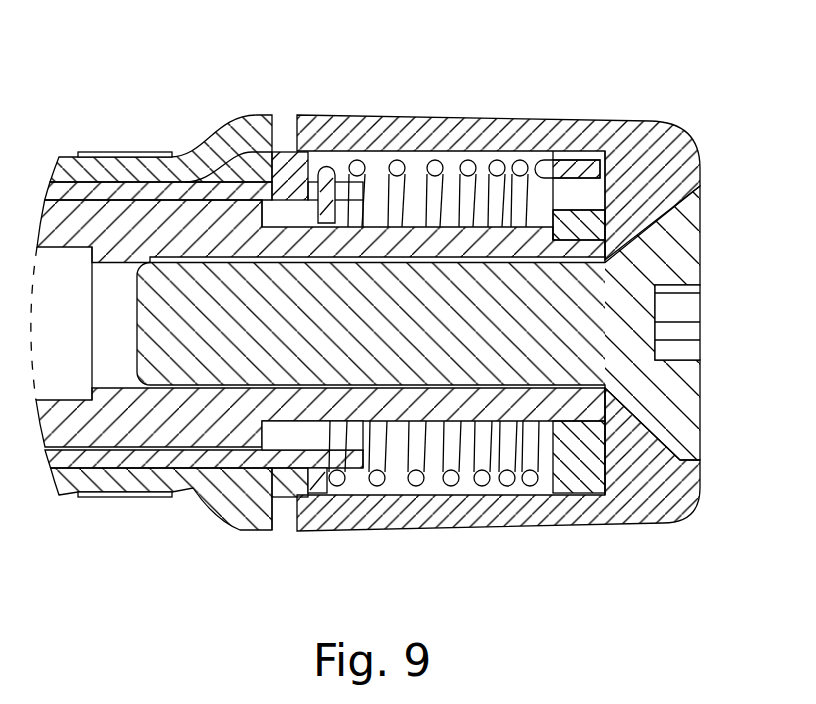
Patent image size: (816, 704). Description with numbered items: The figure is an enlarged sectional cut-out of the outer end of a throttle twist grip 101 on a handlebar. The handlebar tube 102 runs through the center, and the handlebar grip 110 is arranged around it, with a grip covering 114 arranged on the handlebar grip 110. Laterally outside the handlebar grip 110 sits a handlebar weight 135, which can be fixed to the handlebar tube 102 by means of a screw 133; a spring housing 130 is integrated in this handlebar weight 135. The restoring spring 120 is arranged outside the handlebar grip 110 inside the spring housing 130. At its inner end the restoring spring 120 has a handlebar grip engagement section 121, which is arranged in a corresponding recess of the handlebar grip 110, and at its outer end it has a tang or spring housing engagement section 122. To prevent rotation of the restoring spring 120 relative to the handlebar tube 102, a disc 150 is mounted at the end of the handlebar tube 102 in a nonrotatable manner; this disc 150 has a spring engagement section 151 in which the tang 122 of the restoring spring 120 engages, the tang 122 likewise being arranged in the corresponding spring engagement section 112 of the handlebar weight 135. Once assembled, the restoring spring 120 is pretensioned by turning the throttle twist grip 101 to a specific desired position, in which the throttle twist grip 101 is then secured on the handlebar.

The throttle twist grip 101 is at (470, 98).
The handlebar tube 102 is at (165, 225).
The handlebar grip 110 is at (195, 455).
The spring engagement section 112 is at (288, 183).
The grip covering 114 is at (95, 478).
The restoring spring 120 is at (440, 200).
The handlebar grip engagement section 121 is at (325, 192).
The spring housing engagement section 122 is at (565, 162).
The spring housing 130 is at (410, 513).
The screw 133 is at (643, 373).
The handlebar weight 135 is at (616, 507).
The disc 150 is at (583, 225).
The spring engagement section 151 is at (583, 193).